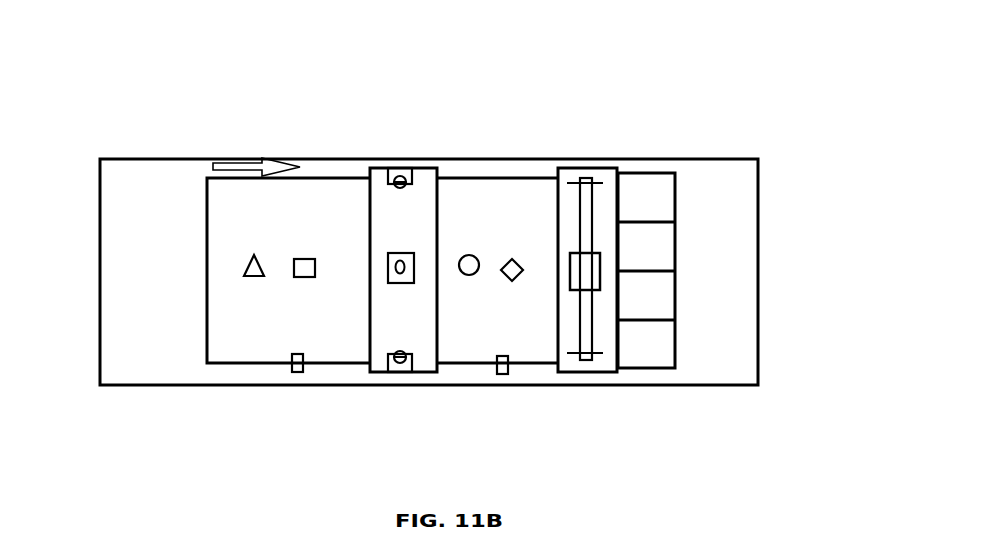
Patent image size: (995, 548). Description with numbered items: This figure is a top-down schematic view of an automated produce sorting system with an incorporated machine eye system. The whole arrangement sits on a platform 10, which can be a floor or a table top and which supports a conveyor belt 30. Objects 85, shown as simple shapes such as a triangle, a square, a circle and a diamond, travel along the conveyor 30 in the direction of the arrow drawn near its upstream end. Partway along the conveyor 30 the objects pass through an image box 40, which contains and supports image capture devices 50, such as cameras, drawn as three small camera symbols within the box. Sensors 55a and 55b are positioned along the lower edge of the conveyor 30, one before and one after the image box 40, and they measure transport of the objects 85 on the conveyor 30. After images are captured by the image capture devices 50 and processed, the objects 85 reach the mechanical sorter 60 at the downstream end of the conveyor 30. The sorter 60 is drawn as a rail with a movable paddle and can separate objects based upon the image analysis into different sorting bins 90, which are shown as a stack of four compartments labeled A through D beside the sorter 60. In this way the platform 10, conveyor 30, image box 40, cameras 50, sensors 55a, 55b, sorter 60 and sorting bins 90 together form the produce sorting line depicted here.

The platform 10 is at (139, 193).
The conveyor belt 30 is at (233, 332).
The image box 40 is at (380, 203).
The image capture devices 50 is at (412, 254).
The objects 85 is at (513, 258).
The mechanical sorter 60 is at (584, 272).
The sorting bins 90 is at (660, 176).
The sensor 55a is at (303, 371).
The sensor 55b is at (403, 458).